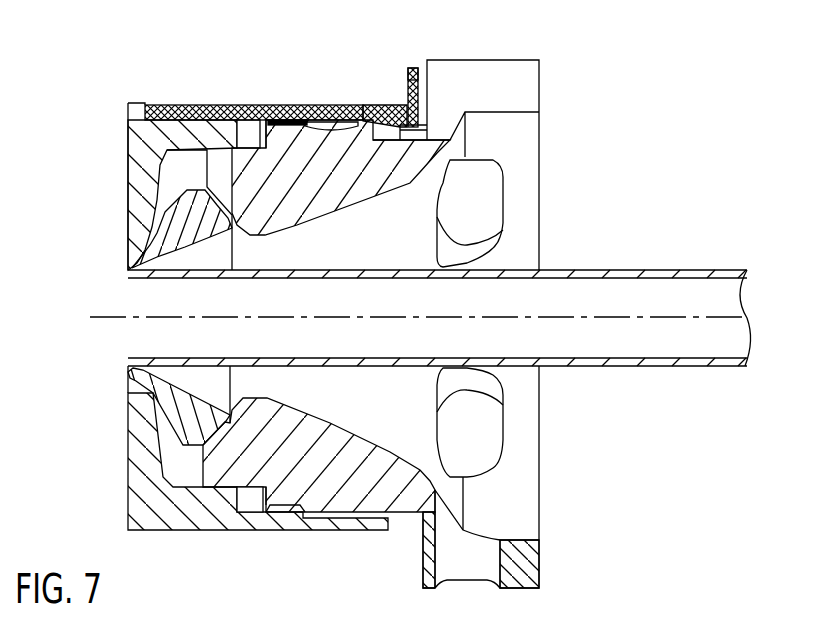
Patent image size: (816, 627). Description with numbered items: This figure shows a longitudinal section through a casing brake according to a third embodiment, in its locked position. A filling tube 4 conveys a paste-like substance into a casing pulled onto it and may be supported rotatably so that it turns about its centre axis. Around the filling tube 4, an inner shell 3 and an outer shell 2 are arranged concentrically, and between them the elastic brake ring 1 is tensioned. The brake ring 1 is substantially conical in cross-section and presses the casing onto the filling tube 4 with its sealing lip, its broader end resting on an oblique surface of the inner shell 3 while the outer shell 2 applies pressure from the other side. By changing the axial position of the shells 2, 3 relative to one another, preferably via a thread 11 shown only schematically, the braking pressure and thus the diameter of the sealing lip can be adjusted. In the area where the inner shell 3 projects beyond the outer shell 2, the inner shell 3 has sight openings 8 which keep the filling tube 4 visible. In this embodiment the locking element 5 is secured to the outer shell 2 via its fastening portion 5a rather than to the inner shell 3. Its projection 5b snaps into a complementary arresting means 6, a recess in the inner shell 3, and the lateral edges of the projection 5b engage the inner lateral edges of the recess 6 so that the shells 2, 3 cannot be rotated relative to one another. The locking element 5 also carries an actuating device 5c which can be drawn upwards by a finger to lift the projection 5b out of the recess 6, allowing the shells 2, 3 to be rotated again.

The brake ring 1 is at (140, 256).
The outer shell 2 is at (145, 488).
The inner shell 3 is at (417, 153).
The filling tube 4 is at (682, 268).
The locking element 5 is at (396, 105).
The fastening portion 5a is at (196, 105).
The projection 5b is at (378, 105).
The actuating device 5c is at (413, 67).
The arresting means 6 is at (335, 121).
The sight openings 8 is at (493, 197).
The thread 11 is at (278, 512).